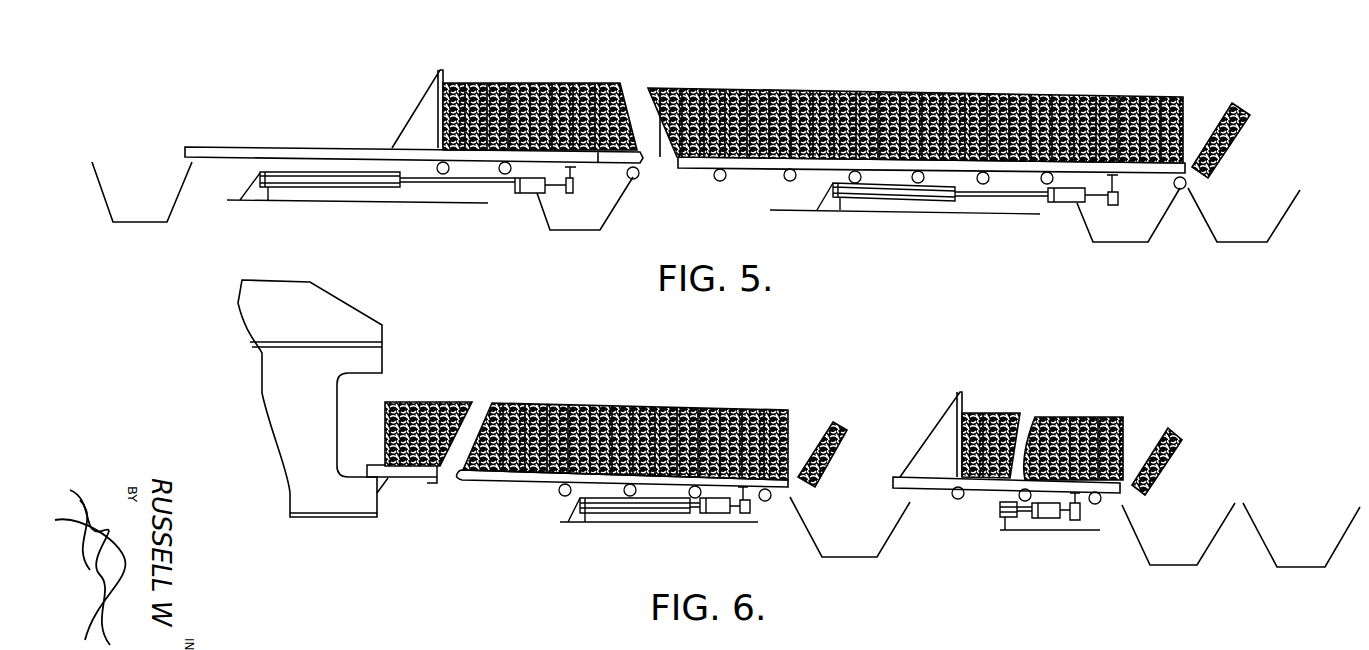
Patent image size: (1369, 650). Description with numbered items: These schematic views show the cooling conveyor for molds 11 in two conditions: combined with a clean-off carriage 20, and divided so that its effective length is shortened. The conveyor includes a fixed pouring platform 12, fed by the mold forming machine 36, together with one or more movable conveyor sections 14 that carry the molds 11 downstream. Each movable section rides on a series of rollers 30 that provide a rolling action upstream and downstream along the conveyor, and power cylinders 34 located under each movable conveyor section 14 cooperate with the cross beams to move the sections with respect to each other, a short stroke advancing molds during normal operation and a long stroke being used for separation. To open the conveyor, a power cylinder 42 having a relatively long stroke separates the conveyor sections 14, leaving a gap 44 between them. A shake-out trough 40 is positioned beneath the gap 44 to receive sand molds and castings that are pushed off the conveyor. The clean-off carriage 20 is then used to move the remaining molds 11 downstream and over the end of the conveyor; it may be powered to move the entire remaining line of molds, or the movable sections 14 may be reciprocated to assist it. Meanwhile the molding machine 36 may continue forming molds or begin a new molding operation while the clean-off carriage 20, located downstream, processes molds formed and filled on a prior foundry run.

In FIG. 5, the molds 11 is at (553, 87).
In FIG. 6, the molds 11 is at (577, 403).
In FIG. 6, the pouring platform 12 is at (403, 487).
In FIG. 5, the movable conveyor sections 14 is at (478, 167).
In FIG. 6, the movable conveyor sections 14 is at (540, 479).
In FIG. 5, the clean-off carriage 20 is at (423, 113).
In FIG. 6, the clean-off carriage 20 is at (938, 457).
In FIG. 5, the rollers 30 is at (718, 182).
In FIG. 6, the rollers 30 is at (768, 501).
In FIG. 5, the power cylinders 34 is at (532, 194).
In FIG. 6, the power cylinders 34 is at (718, 514).
In FIG. 6, the mold forming machine 36 is at (348, 302).
In FIG. 5, the shake-out trough 40 is at (1243, 253).
In FIG. 6, the shake-out trough 40 is at (853, 557).
In FIG. 5, the power cylinder 42 is at (328, 188).
In FIG. 6, the power cylinder 42 is at (632, 514).
In FIG. 6, the gap 44 is at (858, 470).